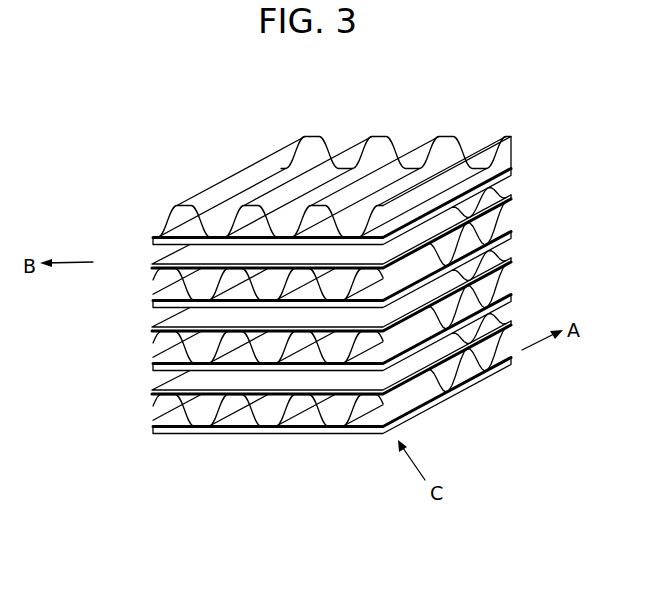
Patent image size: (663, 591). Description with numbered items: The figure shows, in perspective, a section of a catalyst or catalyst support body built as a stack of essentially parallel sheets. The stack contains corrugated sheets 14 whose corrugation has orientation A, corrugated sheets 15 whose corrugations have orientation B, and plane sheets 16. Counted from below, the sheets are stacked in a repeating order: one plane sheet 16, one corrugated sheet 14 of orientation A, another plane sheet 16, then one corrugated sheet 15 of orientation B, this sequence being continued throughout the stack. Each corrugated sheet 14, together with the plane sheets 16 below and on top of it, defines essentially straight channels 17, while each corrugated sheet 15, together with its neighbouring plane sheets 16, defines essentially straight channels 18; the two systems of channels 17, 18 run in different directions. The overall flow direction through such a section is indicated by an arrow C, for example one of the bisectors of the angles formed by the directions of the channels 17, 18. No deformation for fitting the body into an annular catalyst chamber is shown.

The corrugated sheet 14 is at (167, 222).
The corrugated sheet 15 is at (510, 181).
The plane sheet 16 is at (155, 238).
The channels 17 is at (263, 413).
The channels 18 is at (492, 268).